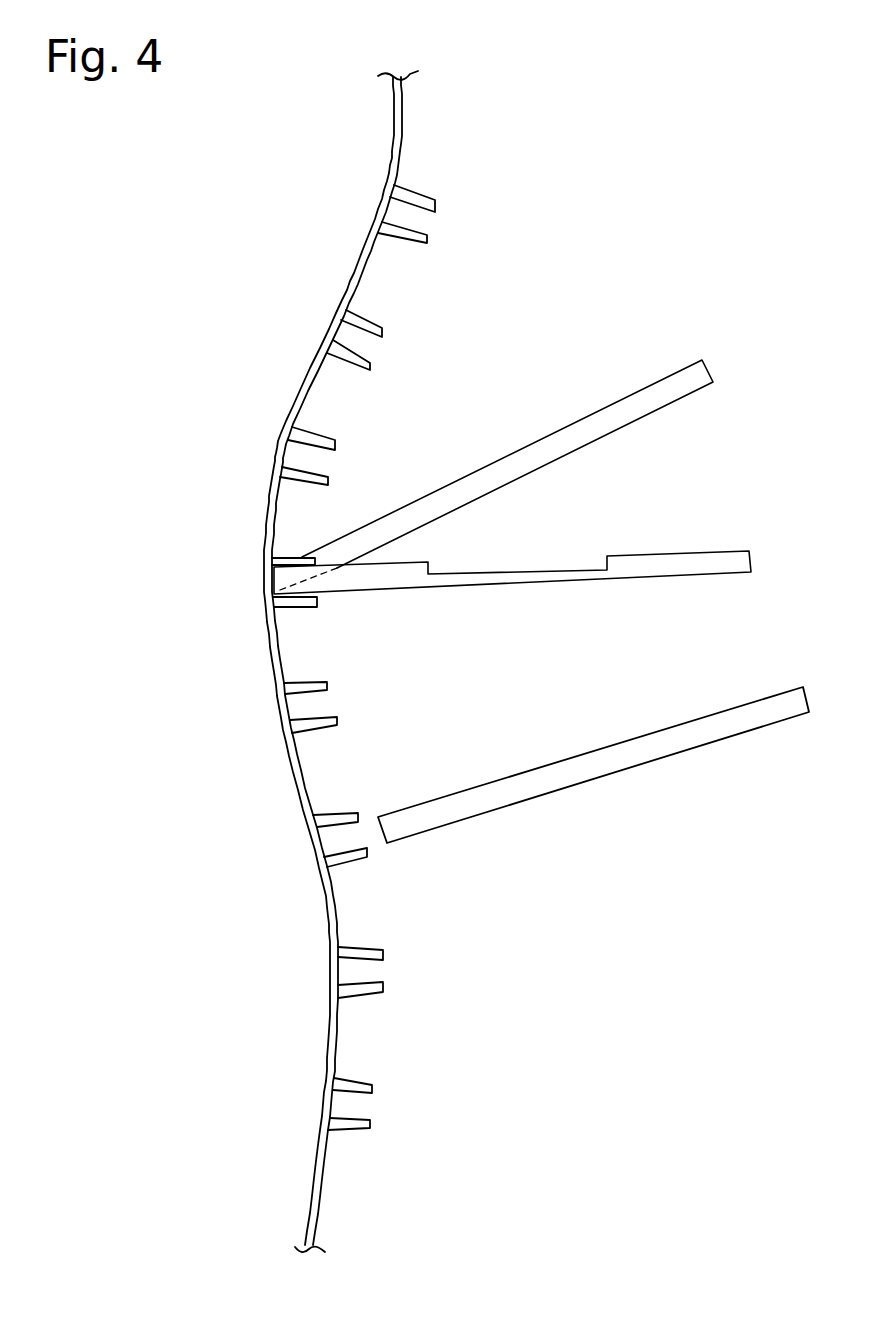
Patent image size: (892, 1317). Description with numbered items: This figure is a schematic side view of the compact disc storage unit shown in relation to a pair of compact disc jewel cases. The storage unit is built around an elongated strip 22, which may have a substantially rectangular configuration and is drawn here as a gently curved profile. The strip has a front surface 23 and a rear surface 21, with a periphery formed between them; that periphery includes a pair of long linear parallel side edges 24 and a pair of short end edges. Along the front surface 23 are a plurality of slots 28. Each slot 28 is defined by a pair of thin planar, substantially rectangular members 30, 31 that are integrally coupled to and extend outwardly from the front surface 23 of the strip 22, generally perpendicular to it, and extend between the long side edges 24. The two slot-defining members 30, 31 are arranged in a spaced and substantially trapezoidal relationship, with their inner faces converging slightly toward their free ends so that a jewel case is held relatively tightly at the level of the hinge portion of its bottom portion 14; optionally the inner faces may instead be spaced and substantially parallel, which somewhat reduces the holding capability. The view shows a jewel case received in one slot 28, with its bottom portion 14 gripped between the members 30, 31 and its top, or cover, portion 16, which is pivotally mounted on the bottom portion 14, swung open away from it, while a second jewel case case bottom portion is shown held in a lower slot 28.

The bottom portion 14 is at (727, 558).
The top portion 16 is at (693, 377).
The rear surface 21 is at (322, 884).
The elongated strip 22 is at (403, 133).
The front surface 23 is at (337, 905).
The long linear parallel side edge 24 is at (340, 1030).
The slot 28 is at (312, 704).
The slot-defining member 30 is at (317, 433).
The slot-defining member 31 is at (310, 470).